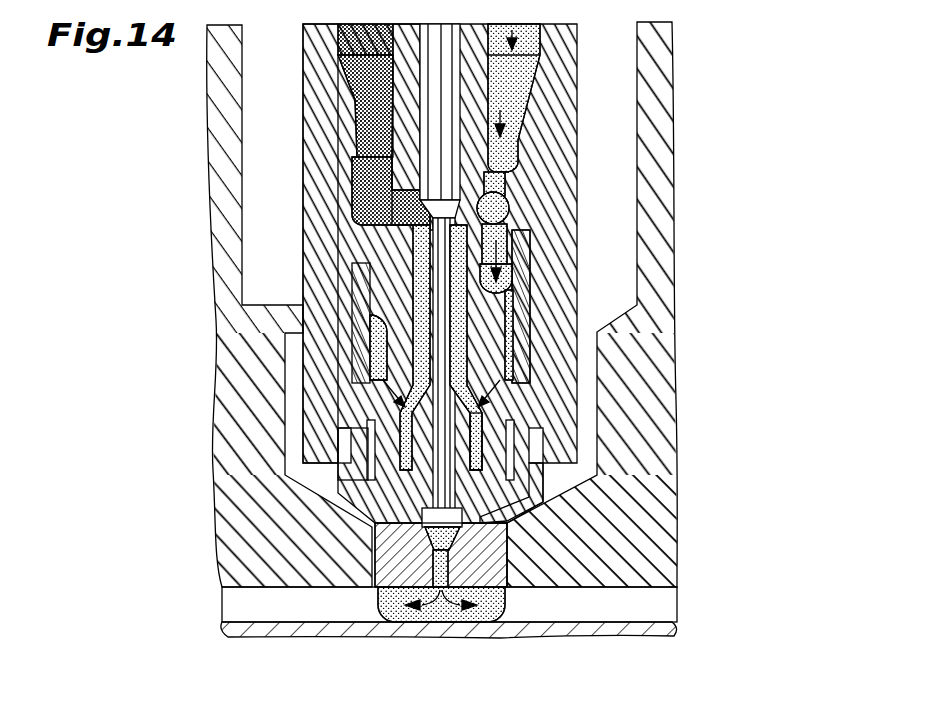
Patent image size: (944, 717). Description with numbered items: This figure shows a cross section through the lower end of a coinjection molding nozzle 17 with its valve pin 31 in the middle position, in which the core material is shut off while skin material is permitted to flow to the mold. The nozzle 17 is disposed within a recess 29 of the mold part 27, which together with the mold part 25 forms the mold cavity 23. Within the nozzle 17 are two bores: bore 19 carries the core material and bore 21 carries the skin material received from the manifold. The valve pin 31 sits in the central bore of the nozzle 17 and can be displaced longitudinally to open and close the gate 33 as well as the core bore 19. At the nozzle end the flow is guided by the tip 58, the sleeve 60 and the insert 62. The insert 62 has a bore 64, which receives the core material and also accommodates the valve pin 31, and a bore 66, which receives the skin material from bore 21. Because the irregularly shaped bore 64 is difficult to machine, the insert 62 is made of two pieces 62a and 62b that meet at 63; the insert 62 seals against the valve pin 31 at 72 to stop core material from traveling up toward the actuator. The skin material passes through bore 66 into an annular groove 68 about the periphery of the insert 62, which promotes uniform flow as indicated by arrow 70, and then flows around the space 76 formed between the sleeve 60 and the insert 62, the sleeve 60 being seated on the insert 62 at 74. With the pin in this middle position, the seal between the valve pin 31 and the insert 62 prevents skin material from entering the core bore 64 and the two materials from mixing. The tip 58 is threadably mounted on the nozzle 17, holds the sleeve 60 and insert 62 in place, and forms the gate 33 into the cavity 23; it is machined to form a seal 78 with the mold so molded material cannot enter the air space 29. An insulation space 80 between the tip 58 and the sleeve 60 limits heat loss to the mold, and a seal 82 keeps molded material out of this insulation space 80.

The injection molding nozzle 17 is at (583, 47).
The bore 19 is at (365, 130).
The bore 21 is at (512, 85).
The mold cavity 23 is at (655, 603).
The mold part 25 is at (674, 632).
The mold part 27 is at (228, 575).
The recess 29 is at (600, 118).
The valve pin 31 is at (353, 432).
The gate 33 is at (441, 622).
The tip 58 is at (490, 560).
The sleeve 60 is at (527, 352).
The insert 62 is at (410, 365).
The insert piece 62a is at (522, 178).
The insert piece 62b is at (500, 262).
The meeting location of insert pieces 63 is at (508, 208).
The bore 64 is at (352, 193).
The bore 66 is at (522, 247).
The annular groove 68 is at (372, 322).
The arrow 70 is at (403, 413).
The seal 72 is at (412, 125).
The seat 74 is at (340, 242).
The space 76 is at (493, 430).
The seal 78 is at (507, 522).
The insulation space 80 is at (395, 520).
The seal 82 is at (420, 535).